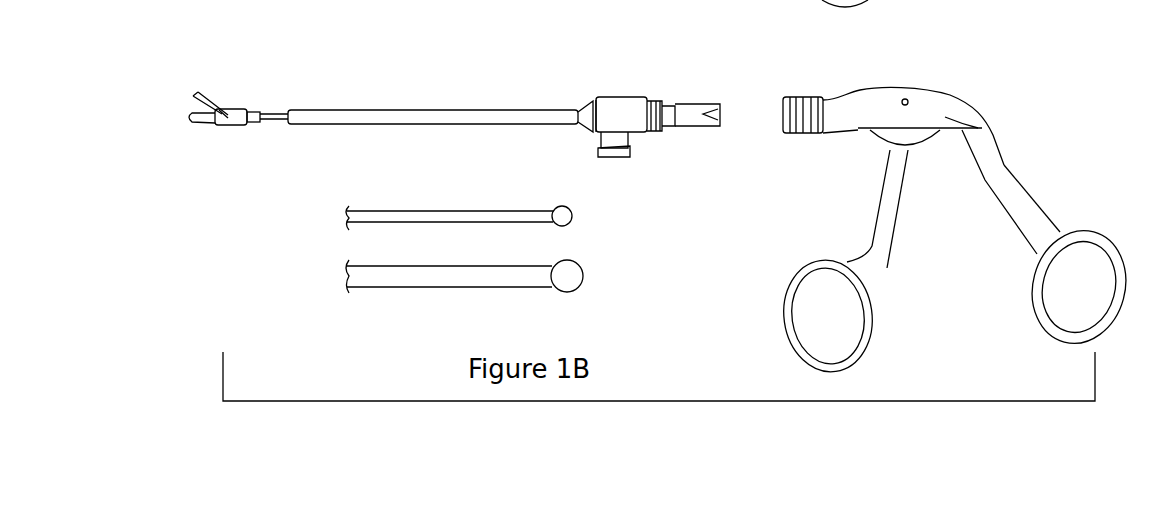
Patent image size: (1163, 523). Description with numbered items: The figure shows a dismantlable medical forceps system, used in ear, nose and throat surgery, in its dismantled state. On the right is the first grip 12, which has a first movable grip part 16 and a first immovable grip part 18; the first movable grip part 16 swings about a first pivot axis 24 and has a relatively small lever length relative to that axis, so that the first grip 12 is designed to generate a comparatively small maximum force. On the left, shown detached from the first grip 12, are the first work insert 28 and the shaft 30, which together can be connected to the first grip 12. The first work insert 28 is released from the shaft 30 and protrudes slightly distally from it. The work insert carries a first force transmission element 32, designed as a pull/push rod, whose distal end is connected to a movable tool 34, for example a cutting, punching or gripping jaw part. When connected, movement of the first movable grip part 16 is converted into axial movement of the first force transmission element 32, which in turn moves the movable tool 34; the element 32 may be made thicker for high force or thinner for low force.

The first grip 12 is at (1045, 153).
The first movable grip part 16 is at (877, 222).
The first immovable grip part 18 is at (1020, 221).
The first pivot axis 24 is at (908, 99).
The first work insert 28 is at (250, 107).
The shaft 30 is at (432, 118).
The first force transmission element 32 is at (272, 124).
The movable tool 34 is at (206, 96).